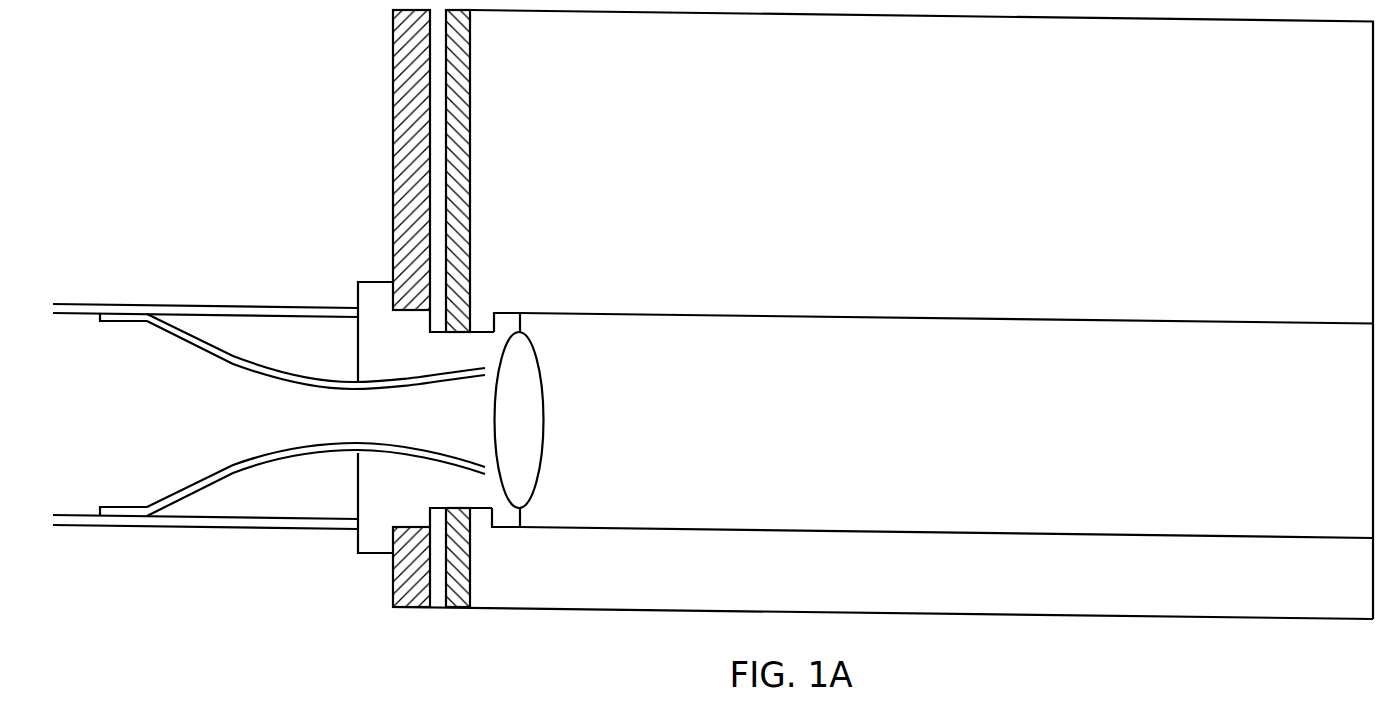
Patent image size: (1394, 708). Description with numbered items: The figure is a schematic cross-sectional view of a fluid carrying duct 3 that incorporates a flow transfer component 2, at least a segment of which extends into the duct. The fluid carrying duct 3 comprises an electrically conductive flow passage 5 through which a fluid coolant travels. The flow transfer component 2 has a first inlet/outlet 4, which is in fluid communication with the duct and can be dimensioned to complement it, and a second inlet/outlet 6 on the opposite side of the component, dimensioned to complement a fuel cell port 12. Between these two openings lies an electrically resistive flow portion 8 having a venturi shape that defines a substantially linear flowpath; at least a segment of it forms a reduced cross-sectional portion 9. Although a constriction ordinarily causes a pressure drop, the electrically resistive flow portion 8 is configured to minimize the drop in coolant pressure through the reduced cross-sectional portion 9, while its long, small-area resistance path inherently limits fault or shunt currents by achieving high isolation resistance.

The flow transfer component 2 is at (386, 499).
The fluid carrying duct 3 is at (240, 536).
The first inlet/outlet 4 is at (378, 553).
The electrically conductive flow passage 5 is at (77, 422).
The second inlet/outlet 6 is at (531, 390).
The electrically resistive flow portion 8 is at (316, 386).
The reduced cross-sectional portion 9 is at (394, 399).
The fuel cell port 12 is at (511, 313).